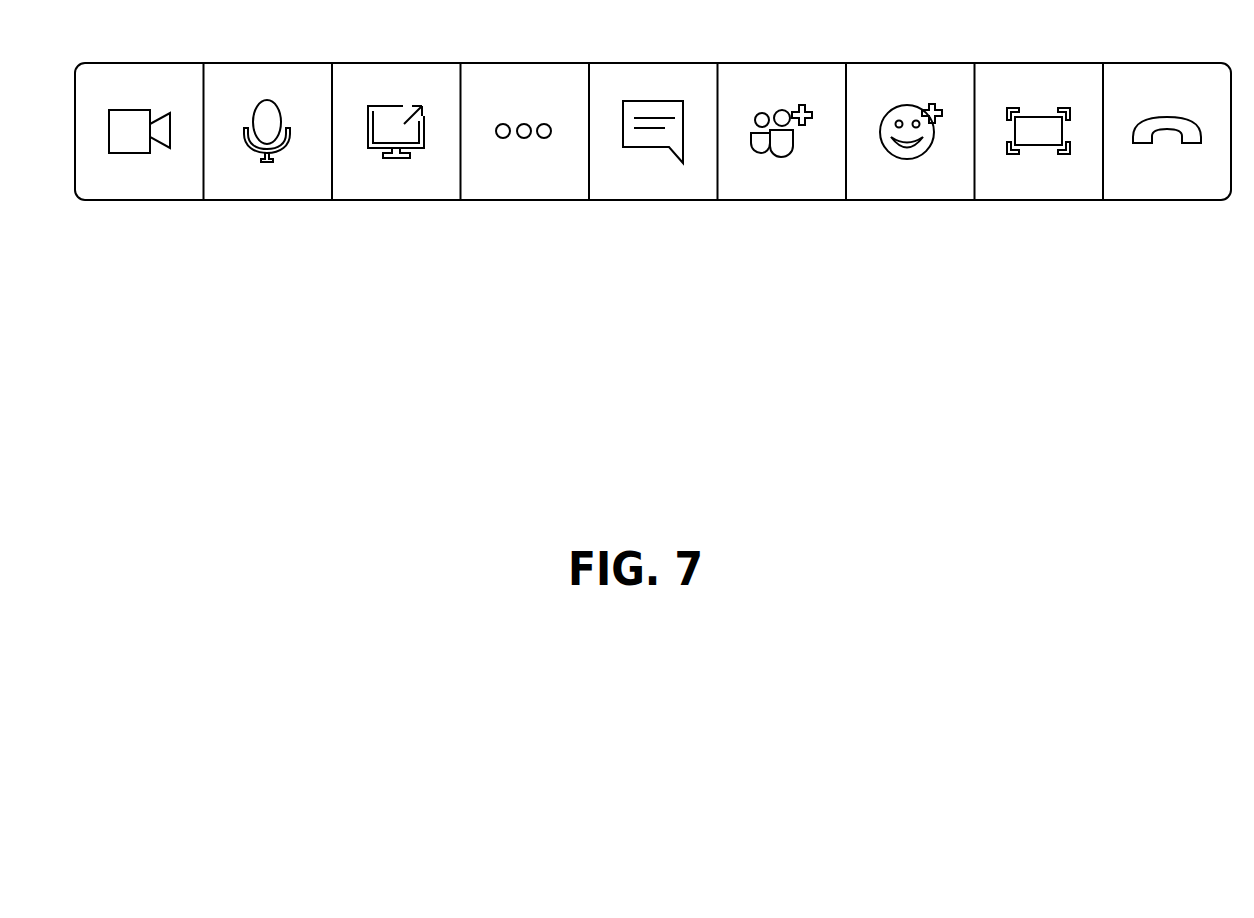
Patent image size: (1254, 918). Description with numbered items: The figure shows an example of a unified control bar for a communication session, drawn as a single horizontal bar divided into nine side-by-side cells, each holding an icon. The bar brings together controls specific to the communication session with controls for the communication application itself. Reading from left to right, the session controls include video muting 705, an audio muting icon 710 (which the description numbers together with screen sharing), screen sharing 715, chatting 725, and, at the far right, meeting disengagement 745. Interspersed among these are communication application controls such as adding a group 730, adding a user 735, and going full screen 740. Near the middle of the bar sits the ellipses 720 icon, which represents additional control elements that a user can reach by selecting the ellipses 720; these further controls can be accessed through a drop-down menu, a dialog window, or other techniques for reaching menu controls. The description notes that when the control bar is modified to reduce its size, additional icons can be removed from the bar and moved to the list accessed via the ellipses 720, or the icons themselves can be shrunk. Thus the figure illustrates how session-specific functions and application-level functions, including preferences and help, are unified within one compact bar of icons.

The video muting control 705 is at (142, 63).
The microphone toggle icon 710 is at (266, 63).
The screen sharing control 715 is at (396, 63).
The ellipses icon 720 is at (524, 63).
The chatting control 725 is at (652, 63).
The adding a group control 730 is at (781, 63).
The adding a user control 735 is at (909, 63).
The full screen control 740 is at (1036, 63).
The meeting disengagement control 745 is at (1166, 63).